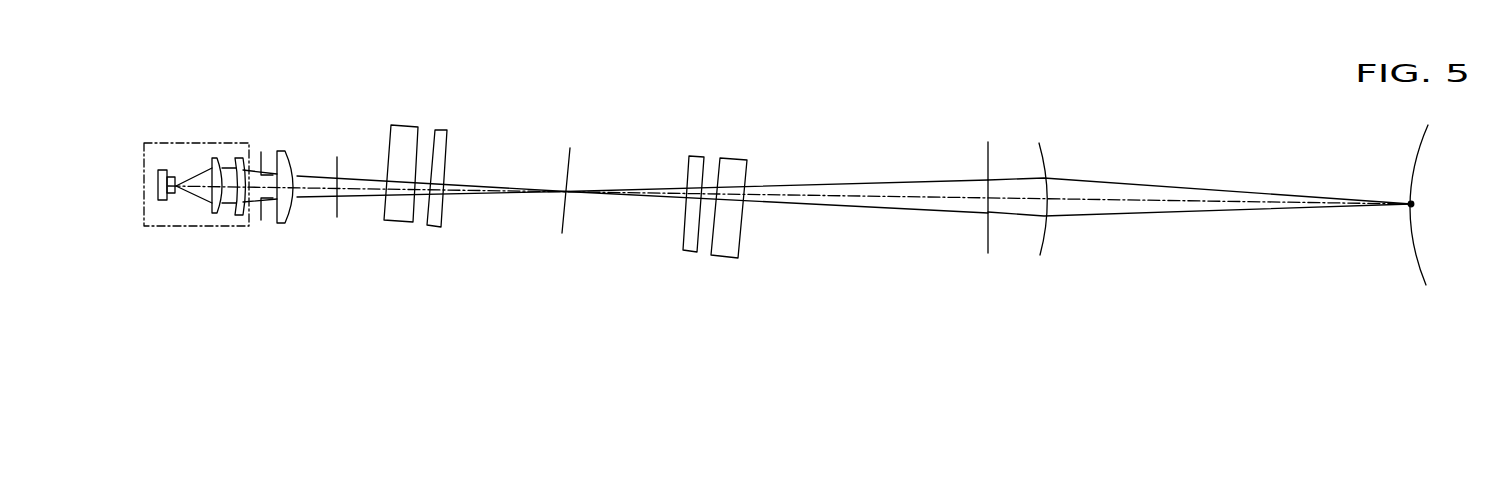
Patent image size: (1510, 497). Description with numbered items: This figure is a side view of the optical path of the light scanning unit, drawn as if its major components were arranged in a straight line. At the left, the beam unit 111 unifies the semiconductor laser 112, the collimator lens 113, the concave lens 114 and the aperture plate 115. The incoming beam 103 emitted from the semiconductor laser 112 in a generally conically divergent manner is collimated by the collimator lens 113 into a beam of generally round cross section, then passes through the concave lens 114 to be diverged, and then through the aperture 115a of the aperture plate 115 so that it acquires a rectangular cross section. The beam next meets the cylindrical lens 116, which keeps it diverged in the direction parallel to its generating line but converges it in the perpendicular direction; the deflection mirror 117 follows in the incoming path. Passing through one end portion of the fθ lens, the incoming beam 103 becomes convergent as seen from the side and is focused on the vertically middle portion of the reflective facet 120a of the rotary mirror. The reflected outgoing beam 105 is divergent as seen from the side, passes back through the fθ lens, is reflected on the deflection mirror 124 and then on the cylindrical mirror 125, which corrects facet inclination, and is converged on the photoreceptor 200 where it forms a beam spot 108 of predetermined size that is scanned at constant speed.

The beam unit 111 is at (170, 142).
The semiconductor laser 112 is at (162, 200).
The collimator lens 113 is at (217, 157).
The concave lens 114 is at (238, 214).
The aperture plate 115 is at (262, 220).
The aperture 115a is at (268, 175).
The cylindrical lens 116 is at (286, 150).
The deflection mirror 117 is at (338, 217).
The incoming beam 103 is at (313, 177).
The outgoing beam 105 is at (648, 197).
The reflective facet 120a is at (569, 163).
The deflection mirror 124 is at (987, 157).
The cylindrical mirror 125 is at (1042, 150).
The photoreceptor 200 is at (1420, 140).
The beam spot 108 is at (1413, 204).